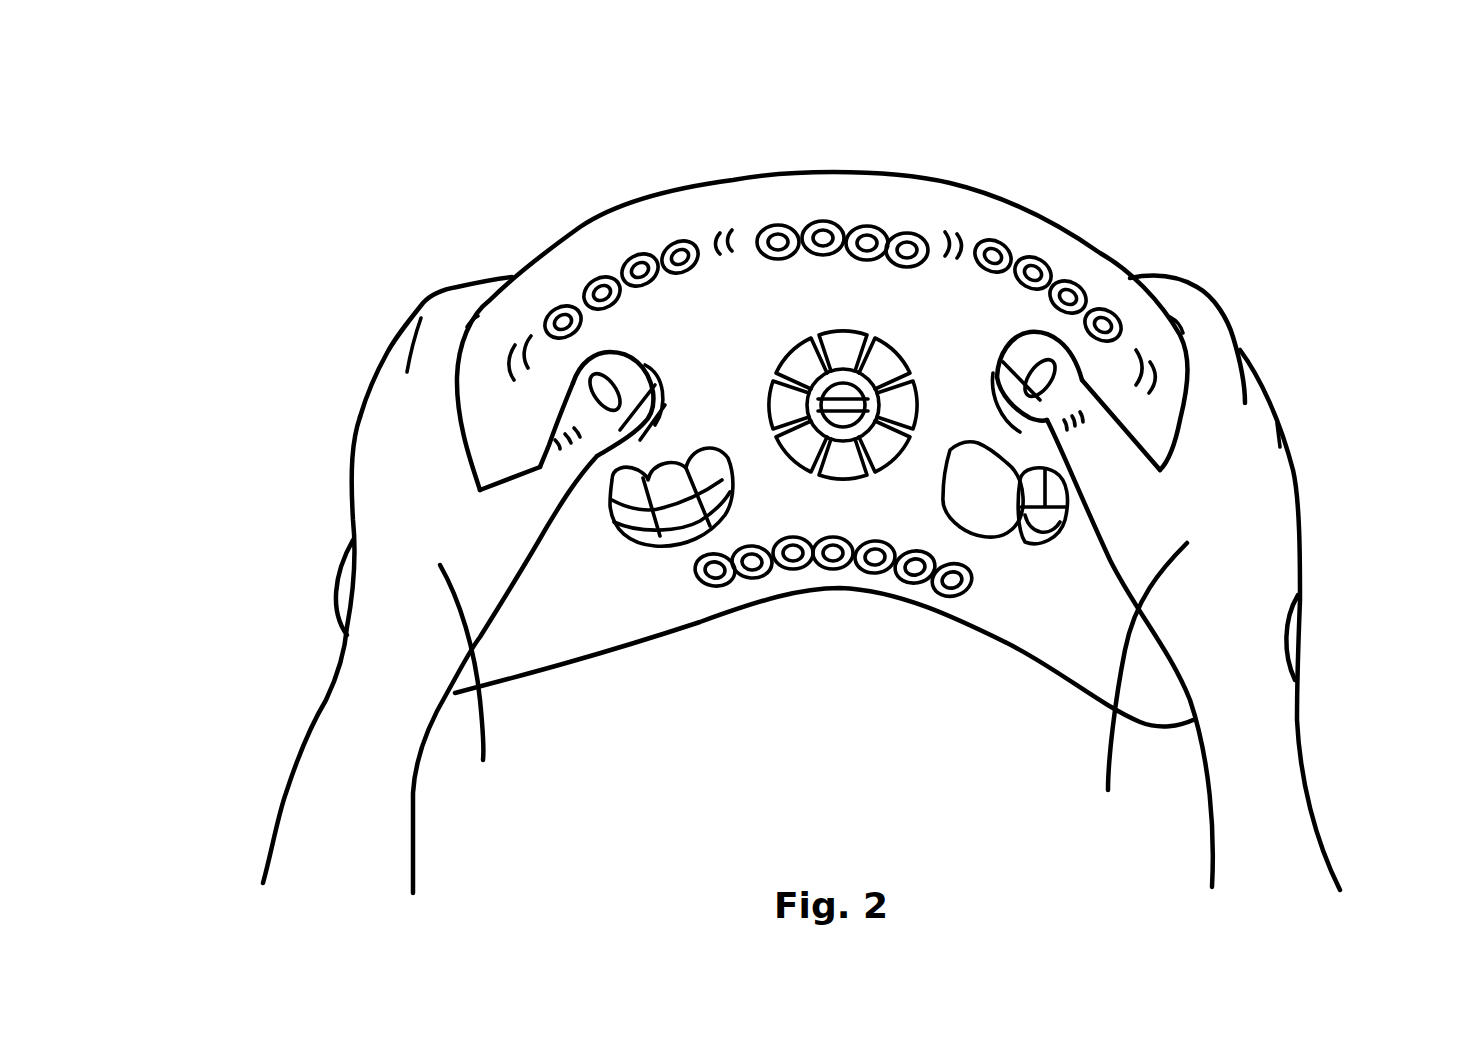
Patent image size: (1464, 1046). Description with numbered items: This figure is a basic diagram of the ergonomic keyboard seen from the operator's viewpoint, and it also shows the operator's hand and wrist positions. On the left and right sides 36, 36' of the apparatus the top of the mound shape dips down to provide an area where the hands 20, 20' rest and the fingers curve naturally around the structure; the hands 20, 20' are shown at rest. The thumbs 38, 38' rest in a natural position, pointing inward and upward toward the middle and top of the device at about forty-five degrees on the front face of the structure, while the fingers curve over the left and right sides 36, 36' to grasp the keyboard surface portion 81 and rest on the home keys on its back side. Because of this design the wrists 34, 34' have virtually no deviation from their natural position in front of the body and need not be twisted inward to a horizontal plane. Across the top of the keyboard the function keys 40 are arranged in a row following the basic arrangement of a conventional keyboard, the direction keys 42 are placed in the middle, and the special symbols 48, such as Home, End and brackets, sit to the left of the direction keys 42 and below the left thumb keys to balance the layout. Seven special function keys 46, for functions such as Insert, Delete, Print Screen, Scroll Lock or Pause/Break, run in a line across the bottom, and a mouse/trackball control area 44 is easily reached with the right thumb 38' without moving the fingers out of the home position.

The hand 20 is at (539, 622).
The hand 20' is at (1102, 609).
The wrist 34 is at (302, 599).
The wrist 34' is at (1343, 637).
The left side 36 is at (268, 650).
The right side 36' is at (1341, 620).
The thumb 38 is at (395, 372).
The thumb 38' is at (1258, 364).
The function keys 40 is at (584, 287).
The direction keys 42 is at (787, 337).
The mouse/trackball control area 44 is at (1011, 557).
The special function keys 46 is at (830, 570).
The special symbols 48 is at (627, 560).
The keyboard surface portion 81 is at (943, 180).